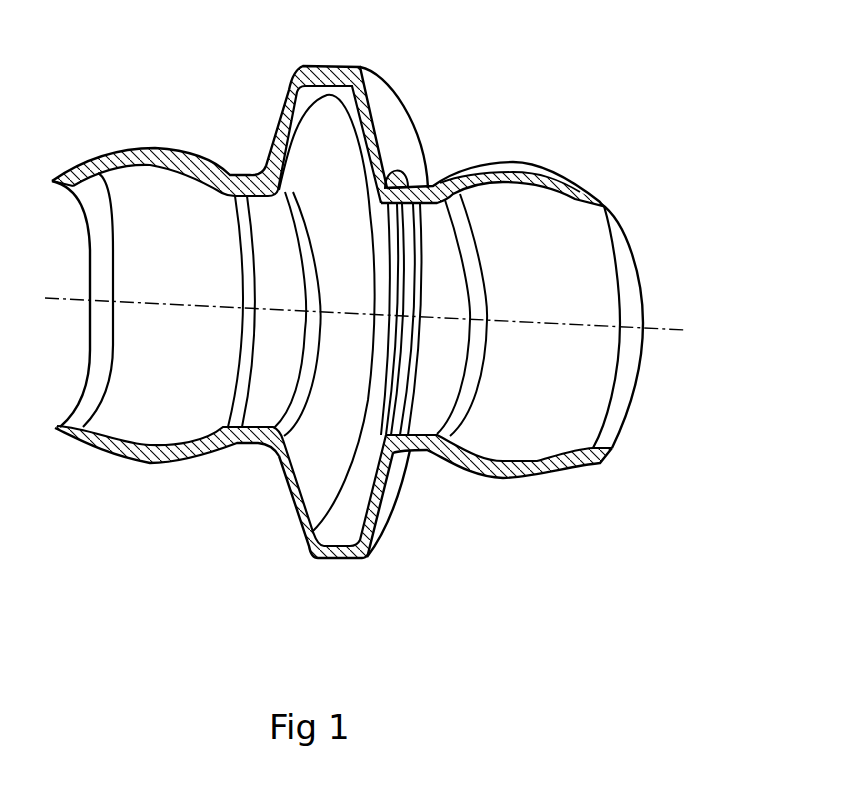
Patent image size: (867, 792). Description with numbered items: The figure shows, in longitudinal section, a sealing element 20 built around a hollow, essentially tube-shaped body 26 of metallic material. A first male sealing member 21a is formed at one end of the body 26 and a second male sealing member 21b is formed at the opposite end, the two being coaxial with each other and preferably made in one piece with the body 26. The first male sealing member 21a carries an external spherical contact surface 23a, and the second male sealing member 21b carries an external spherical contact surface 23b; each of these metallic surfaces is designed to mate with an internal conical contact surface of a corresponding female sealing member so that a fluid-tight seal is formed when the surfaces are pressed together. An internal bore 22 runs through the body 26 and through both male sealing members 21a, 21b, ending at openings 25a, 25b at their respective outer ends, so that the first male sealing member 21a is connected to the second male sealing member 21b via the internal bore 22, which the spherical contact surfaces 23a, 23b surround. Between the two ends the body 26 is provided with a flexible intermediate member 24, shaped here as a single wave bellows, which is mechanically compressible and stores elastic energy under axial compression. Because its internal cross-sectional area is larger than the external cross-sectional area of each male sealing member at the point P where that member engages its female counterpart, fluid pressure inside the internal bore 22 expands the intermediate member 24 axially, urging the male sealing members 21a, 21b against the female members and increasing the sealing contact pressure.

The sealing element 20 is at (428, 66).
The first male sealing member 21a is at (150, 447).
The second male sealing member 21b is at (527, 463).
The internal bore 22 is at (591, 278).
The external spherical contact surface 23a is at (107, 456).
The external spherical contact surface 23b is at (563, 473).
The flexible intermediate member 24 is at (322, 552).
The opening 25a is at (78, 265).
The opening 25b is at (607, 362).
The tube-shaped body 26 is at (430, 186).
The point of engagement P is at (108, 174).